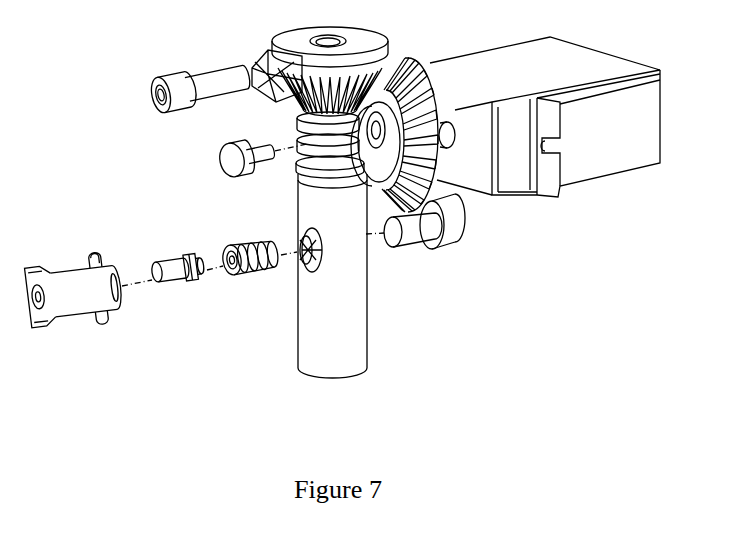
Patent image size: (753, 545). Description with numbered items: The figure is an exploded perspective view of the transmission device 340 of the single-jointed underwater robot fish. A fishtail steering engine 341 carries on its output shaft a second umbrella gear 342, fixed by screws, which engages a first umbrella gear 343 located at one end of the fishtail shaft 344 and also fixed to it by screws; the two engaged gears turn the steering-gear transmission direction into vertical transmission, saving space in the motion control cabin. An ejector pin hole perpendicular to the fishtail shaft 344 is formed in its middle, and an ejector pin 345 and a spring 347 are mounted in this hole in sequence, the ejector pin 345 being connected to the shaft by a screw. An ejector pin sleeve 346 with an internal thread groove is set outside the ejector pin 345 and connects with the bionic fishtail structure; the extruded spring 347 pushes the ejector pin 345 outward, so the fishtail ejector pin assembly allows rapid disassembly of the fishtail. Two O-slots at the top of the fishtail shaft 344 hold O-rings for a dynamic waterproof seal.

The transmission device 340 is at (130, 132).
The fishtail steering engine 341 is at (513, 150).
The second umbrella gear 342 is at (413, 80).
The first umbrella gear 343 is at (313, 58).
The fishtail shaft 344 is at (330, 280).
The ejector pin 345 is at (180, 273).
The ejector pin sleeve 346 is at (70, 293).
The spring 347 is at (260, 273).